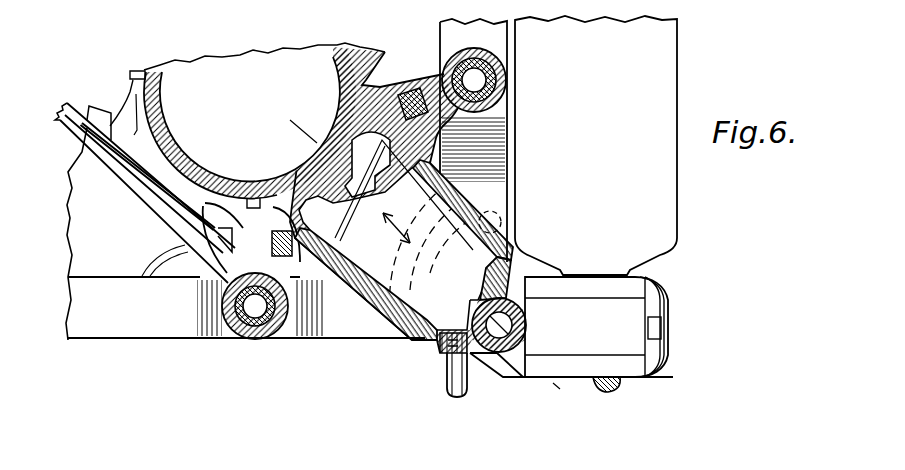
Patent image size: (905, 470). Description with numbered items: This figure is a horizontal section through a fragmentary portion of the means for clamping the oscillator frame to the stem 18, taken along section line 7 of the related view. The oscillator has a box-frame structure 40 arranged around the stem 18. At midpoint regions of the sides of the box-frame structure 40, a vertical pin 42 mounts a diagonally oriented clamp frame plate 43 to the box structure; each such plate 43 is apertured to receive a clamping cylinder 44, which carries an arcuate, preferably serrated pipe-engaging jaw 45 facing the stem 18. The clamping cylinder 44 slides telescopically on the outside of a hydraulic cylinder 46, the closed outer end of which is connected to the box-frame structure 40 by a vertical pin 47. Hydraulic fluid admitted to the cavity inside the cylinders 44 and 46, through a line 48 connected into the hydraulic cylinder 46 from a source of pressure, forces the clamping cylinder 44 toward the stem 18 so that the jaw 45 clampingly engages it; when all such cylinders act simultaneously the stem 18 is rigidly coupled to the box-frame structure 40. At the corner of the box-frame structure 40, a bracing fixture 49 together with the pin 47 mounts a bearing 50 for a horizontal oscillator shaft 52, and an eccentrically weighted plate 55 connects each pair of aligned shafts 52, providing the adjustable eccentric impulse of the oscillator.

The section line 7— 7 is at (291, 114).
The stem 18 is at (203, 158).
The box-frame structure 40 is at (204, 352).
The vertical pin 42 is at (507, 68).
The clamp frame plate 43 is at (190, 267).
The clamping cylinder 44 is at (369, 340).
The pipe-engaging jaw 45 is at (258, 192).
The hydraulic cylinder 46 is at (425, 350).
The vertical pin 47 is at (504, 355).
The line 48 is at (447, 395).
The bracing fixture 49 is at (490, 378).
The bearing 50 is at (640, 377).
The oscillator shaft 52 is at (620, 387).
The eccentrically weighted plate 55 is at (665, 197).